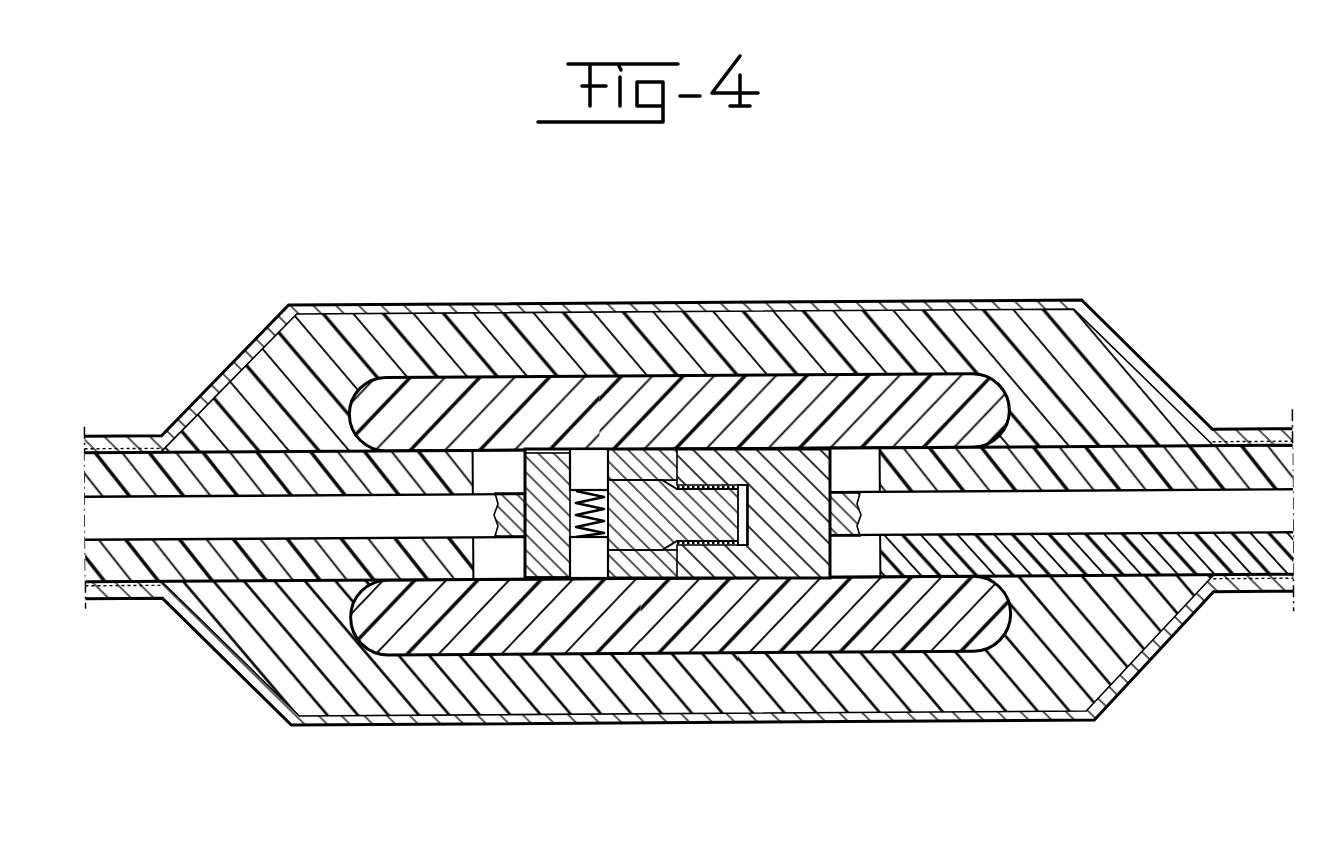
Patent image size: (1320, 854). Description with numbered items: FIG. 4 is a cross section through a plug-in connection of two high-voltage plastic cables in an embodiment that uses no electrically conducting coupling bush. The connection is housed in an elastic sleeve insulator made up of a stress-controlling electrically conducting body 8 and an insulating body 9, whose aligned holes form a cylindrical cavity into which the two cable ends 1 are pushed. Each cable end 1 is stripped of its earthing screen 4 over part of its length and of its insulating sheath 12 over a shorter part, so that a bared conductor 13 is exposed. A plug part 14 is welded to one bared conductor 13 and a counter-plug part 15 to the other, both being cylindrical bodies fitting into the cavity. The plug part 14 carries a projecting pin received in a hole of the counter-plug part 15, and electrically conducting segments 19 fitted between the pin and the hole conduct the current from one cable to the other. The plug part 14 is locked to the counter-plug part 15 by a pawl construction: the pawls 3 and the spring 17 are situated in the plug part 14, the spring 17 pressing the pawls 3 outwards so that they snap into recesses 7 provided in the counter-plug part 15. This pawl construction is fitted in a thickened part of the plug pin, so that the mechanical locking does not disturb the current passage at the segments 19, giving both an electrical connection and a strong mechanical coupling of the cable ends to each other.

The cable end 1 is at (252, 445).
The pawls 3 is at (565, 456).
The earthing screen 4 is at (143, 437).
The recesses 7 is at (587, 470).
The stress-controlling electrically conducting body 8 is at (956, 403).
The insulating body 9 is at (1102, 387).
The insulating sheath 12 is at (223, 572).
The bared conductor 13 is at (960, 513).
The plug part 14 is at (641, 505).
The counter-plug part 15 is at (787, 505).
The spring 17 is at (613, 523).
The electrically conducting segments 19 is at (716, 478).